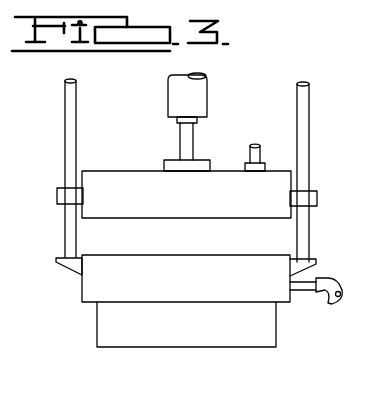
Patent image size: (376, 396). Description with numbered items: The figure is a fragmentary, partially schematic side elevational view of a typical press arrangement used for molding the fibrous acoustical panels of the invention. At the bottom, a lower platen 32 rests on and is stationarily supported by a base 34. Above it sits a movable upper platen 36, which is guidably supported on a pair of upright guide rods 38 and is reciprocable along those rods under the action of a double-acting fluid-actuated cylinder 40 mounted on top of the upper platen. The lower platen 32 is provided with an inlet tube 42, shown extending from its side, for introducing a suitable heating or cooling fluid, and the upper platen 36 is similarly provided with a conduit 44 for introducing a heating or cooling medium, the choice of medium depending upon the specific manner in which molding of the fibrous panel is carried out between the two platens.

The lower platen 32 is at (93, 290).
The base 34 is at (108, 337).
The upper platen 36 is at (166, 208).
The guide rods 38 is at (76, 112).
The double-acting fluid-actuated cylinder 40 is at (195, 93).
The inlet tube 42 is at (303, 290).
The conduit 44 is at (250, 155).